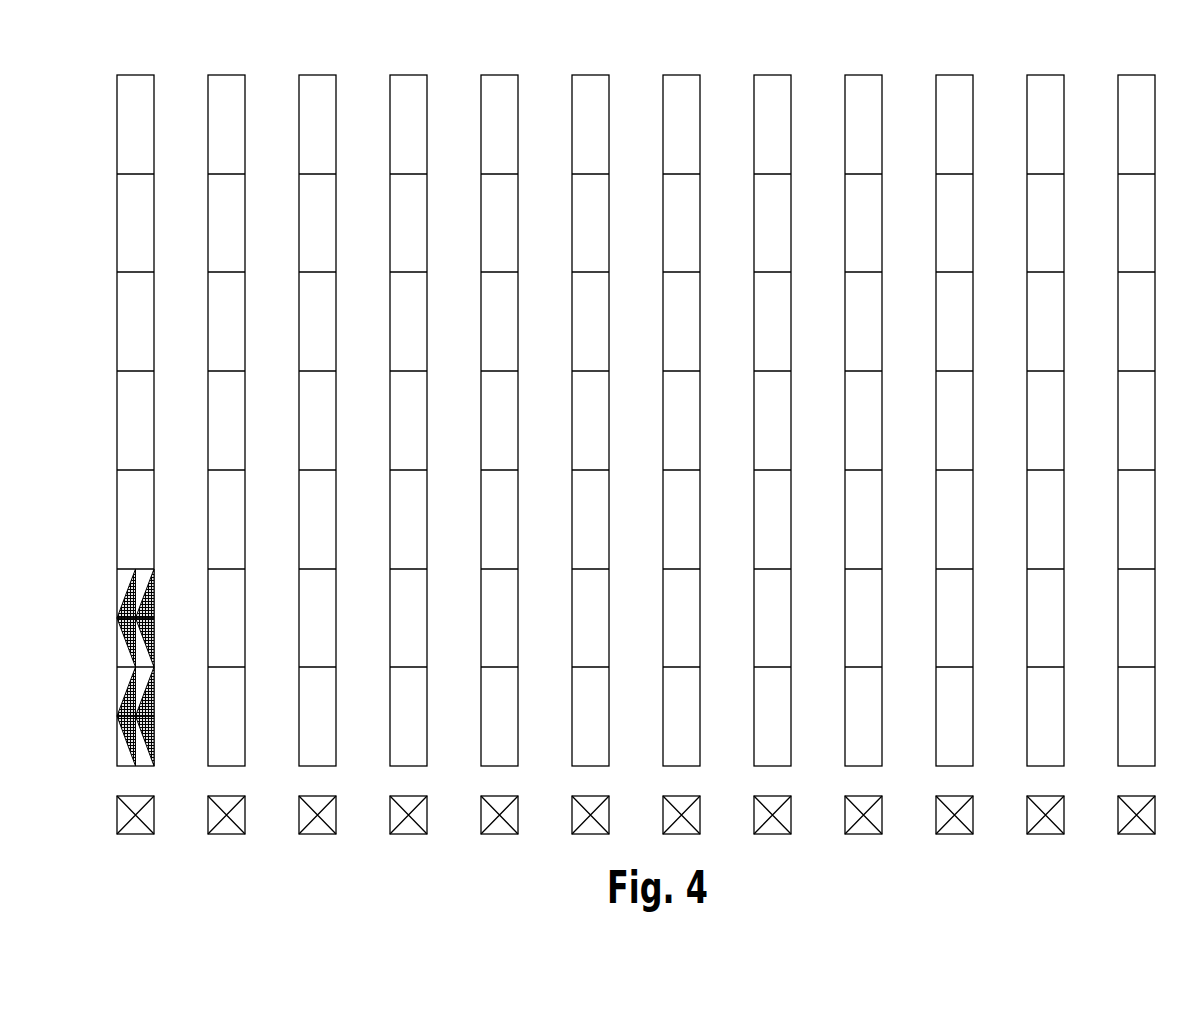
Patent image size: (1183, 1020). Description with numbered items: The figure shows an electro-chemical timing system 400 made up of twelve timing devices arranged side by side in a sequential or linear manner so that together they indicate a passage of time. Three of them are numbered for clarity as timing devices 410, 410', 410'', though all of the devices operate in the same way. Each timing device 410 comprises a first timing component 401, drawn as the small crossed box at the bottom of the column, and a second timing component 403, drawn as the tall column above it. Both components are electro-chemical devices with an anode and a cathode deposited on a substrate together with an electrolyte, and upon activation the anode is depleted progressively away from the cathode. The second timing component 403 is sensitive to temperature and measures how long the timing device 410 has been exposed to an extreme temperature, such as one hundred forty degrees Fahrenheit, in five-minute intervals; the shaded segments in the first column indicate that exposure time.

The temperature exposure indicator display 400 is at (51, 56).
The timing device 410 is at (126, 447).
The timing device 410' is at (239, 447).
The timing device 410'' is at (331, 447).
The second timing component 403 is at (111, 650).
The first timing component 401 is at (111, 805).